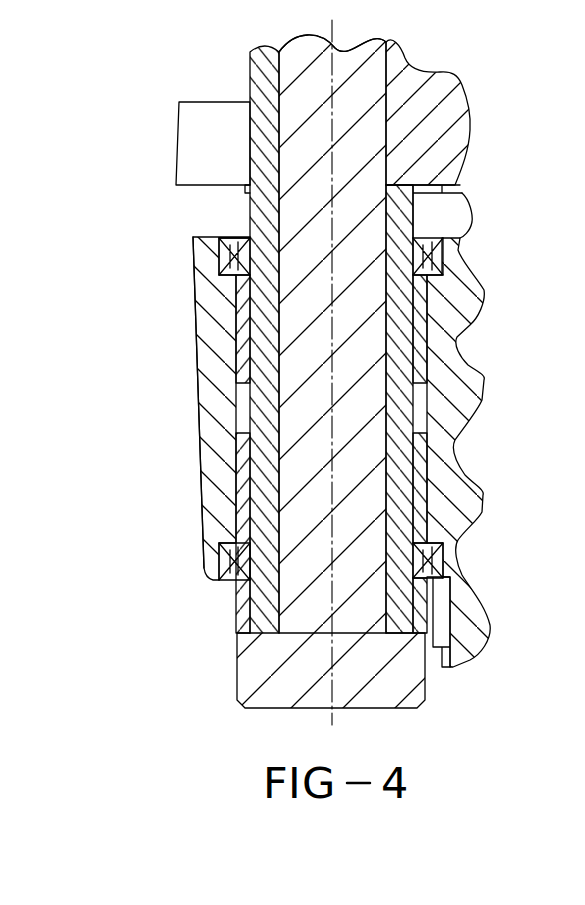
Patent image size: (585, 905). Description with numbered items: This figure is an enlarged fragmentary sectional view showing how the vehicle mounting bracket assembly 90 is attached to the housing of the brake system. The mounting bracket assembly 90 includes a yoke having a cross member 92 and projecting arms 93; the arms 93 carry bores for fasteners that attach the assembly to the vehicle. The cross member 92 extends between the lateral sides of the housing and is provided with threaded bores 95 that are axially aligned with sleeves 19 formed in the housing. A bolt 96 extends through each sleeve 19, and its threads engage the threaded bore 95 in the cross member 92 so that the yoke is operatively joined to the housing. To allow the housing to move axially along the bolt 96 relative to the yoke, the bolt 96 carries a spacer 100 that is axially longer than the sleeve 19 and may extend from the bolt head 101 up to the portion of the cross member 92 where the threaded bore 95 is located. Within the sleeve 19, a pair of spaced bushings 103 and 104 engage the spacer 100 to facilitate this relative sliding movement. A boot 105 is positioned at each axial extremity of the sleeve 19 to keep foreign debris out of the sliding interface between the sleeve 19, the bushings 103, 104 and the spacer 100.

The sleeve 19 is at (470, 293).
The mounting bracket assembly 90 is at (194, 436).
The cross member 92 is at (455, 125).
The projecting arm 93 is at (192, 142).
The threaded bore 95 is at (388, 68).
The bolt 96 is at (365, 550).
The spacer 100 is at (405, 380).
The bolt head 101 is at (278, 695).
The bushing 103 is at (235, 308).
The bushing 104 is at (245, 507).
The boot 105 is at (234, 248).